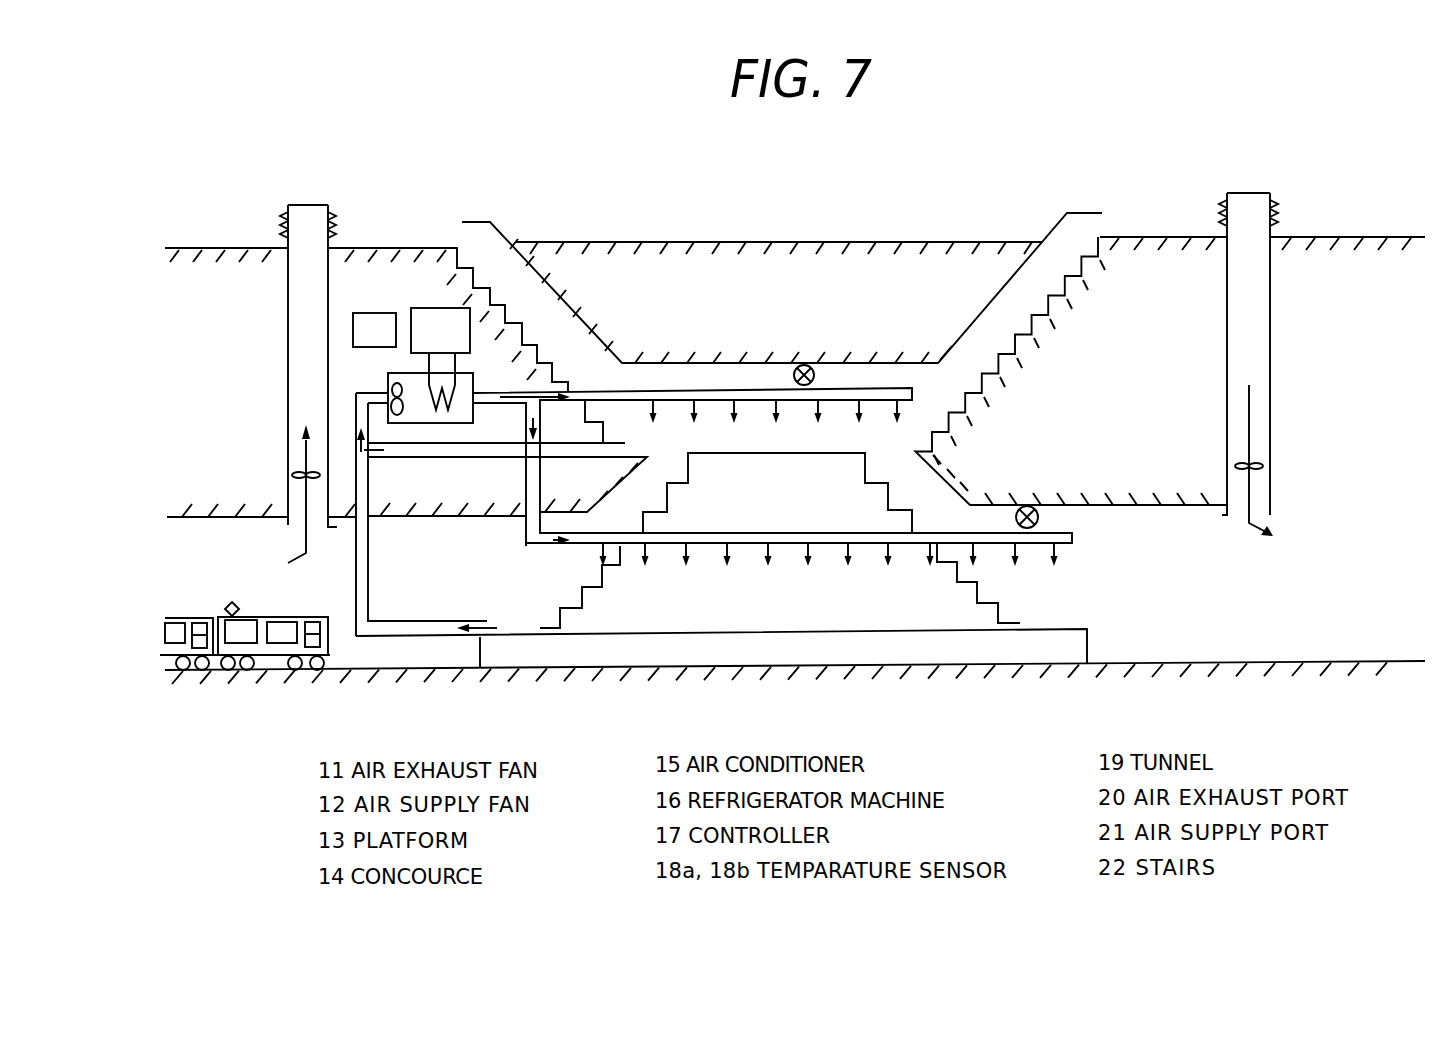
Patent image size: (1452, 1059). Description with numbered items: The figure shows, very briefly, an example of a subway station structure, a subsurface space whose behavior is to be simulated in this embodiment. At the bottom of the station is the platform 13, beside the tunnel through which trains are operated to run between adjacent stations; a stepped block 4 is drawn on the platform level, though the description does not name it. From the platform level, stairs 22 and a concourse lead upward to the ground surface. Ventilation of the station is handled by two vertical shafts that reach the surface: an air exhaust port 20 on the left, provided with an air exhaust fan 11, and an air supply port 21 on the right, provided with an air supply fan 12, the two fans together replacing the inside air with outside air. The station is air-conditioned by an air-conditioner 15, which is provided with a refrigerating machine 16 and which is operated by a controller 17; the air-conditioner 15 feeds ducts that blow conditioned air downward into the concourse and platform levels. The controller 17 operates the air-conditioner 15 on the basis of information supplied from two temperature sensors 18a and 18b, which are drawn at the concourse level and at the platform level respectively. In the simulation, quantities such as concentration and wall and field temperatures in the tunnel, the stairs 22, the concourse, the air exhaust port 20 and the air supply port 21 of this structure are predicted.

The platform steps 4 is at (806, 440).
The air exhaust fan 11 is at (305, 463).
The air supply fan 12 is at (1263, 455).
The platform 13 is at (953, 650).
The air-conditioner 15 is at (465, 385).
The refrigerating machine 16 is at (464, 318).
The controller 17 is at (374, 313).
The temperature sensor 18a is at (808, 365).
The temperature sensor 18b is at (1035, 507).
The air exhaust port 20 is at (300, 338).
The air supply port 21 is at (1256, 303).
The stairs 22 is at (1030, 300).